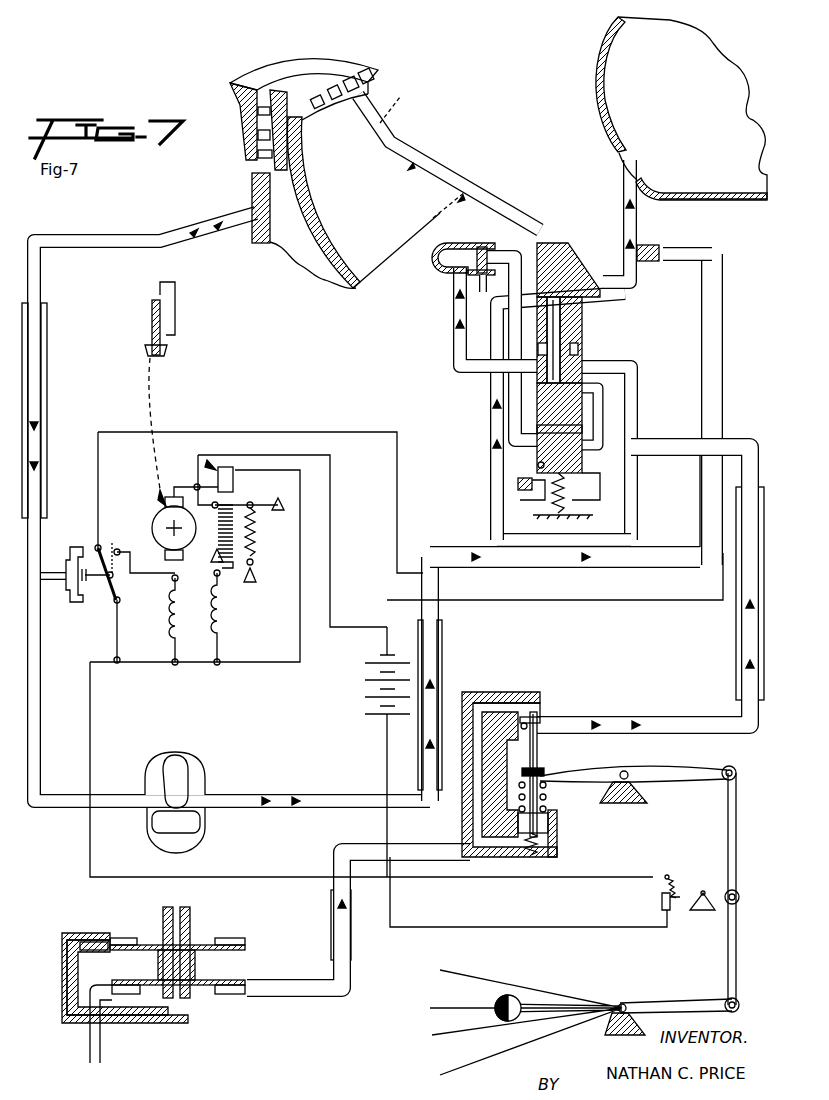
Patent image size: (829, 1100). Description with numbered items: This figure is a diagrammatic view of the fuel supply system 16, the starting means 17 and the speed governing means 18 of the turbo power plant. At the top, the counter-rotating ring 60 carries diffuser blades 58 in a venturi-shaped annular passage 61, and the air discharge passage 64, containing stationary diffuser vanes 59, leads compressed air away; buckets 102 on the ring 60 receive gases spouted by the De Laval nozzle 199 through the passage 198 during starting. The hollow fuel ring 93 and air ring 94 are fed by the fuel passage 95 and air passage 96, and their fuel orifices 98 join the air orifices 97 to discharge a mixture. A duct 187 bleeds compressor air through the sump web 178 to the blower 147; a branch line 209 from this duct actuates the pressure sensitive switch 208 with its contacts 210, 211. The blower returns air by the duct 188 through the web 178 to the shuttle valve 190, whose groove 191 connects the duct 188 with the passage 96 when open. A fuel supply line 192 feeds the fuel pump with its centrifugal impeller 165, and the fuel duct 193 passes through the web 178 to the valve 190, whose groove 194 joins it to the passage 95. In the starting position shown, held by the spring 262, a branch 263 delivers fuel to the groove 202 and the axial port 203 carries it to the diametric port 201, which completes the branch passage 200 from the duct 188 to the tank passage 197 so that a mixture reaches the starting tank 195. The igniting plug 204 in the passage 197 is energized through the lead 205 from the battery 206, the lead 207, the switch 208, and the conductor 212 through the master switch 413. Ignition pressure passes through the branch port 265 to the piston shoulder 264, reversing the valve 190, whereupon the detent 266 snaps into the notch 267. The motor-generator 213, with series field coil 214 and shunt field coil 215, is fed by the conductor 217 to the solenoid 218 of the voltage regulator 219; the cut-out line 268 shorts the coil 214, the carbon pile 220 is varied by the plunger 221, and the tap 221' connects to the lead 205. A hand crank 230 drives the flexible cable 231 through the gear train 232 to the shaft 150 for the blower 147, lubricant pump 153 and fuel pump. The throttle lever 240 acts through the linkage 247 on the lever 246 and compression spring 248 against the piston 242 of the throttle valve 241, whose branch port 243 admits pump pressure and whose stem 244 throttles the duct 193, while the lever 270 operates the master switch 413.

The fuel supply system 16 is at (230, 1002).
The starting means 17 is at (558, 240).
The speed governing means 18 is at (618, 802).
The diffuser blades 58 is at (252, 180).
The stationary diffuser vanes 59 is at (302, 190).
The counter-rotating ring 60 is at (230, 95).
The annular passage 61 is at (258, 146).
The air discharge passage 64 is at (292, 256).
The fuel ring 93 is at (494, 252).
The air ring 94 is at (456, 242).
The fuel passage 95 is at (506, 420).
The air passage 96 is at (452, 336).
The air orifices 97 is at (480, 245).
The fuel orifices 98 is at (478, 272).
The buckets 102 is at (375, 78).
The blower 147 is at (204, 762).
The shaft 150 is at (160, 912).
The lubricant pump 153 is at (226, 938).
The centrifugal impeller 165 is at (230, 978).
The internal web 178 is at (47, 400).
The duct 187 is at (120, 242).
The duct 188 is at (640, 390).
The shuttle valve 190 is at (570, 320).
The annular external groove 191 is at (580, 350).
The fuel supply line 192 is at (100, 1050).
The fuel duct 193 is at (745, 440).
The annular external groove 194 is at (537, 428).
The starting tank 195 is at (598, 70).
The tank passage 197 is at (640, 226).
The nozzle passage 198 is at (450, 170).
The nozzle 199 is at (386, 128).
The branch passage 200 is at (484, 520).
The diametric port 201 is at (600, 296).
The annular external groove 202 is at (537, 386).
The axial port 203 is at (562, 330).
The igniting plug 204 is at (660, 246).
The lead 205 is at (724, 318).
The storage battery 206 is at (378, 684).
The lead 207 is at (724, 384).
The pressure sensitive switch 208 is at (107, 592).
The branch line 209 is at (52, 580).
The stationary contact 210 is at (96, 546).
The stationary contact 211 is at (117, 549).
The conductor 212 is at (120, 664).
The motor-generator 213 is at (160, 506).
The series field coil 214 is at (168, 630).
The shunt field coil 215 is at (224, 616).
The conductor 217 is at (242, 664).
The solenoid 218 is at (234, 484).
The voltage regulator 219 is at (210, 460).
The carbon pile 220 is at (232, 574).
The spring urged plunger 221 is at (255, 519).
The tap 221' is at (292, 541).
The hand crank 230 is at (178, 296).
The flexible cable 231 is at (152, 384).
The gear train 232 is at (150, 336).
The throttle lever 240 is at (676, 998).
The throttle valve 241 is at (542, 704).
The piston 242 is at (548, 836).
The branch port 243 is at (478, 850).
The stem 244 is at (540, 760).
The lever 246 is at (670, 766).
The linkage 247 is at (738, 828).
The compression spring 248 is at (544, 805).
The spring 262 is at (575, 496).
The branch 263 is at (600, 418).
The piston shoulder 264 is at (490, 306).
The branch port 265 is at (612, 302).
The detent 266 is at (530, 500).
The notch 267 is at (538, 465).
The cut-out line 268 is at (150, 573).
The lever 270 is at (692, 894).
The master switch 413 is at (658, 898).